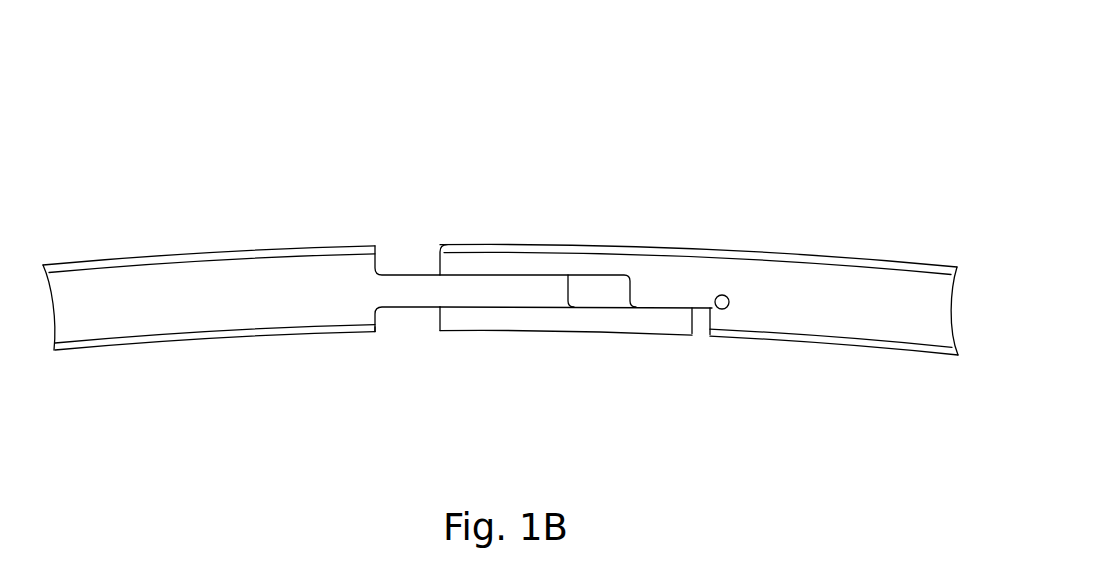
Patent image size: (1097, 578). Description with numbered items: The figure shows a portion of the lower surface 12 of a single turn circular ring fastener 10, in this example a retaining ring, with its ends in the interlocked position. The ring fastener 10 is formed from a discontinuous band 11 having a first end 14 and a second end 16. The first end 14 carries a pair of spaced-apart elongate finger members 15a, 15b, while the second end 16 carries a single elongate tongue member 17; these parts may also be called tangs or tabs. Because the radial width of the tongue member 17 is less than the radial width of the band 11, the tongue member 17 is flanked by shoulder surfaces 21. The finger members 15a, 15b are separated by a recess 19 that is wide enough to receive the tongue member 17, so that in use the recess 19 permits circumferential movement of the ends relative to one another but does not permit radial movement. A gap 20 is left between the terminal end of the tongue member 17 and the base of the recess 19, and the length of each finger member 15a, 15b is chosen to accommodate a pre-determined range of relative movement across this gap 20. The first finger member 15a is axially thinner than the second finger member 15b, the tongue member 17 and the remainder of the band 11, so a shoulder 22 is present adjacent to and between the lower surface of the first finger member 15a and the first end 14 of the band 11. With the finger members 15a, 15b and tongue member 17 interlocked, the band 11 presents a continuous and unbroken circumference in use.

The ring fastener 10 is at (898, 185).
The discontinuous band 11 is at (483, 145).
The lower surface 12 is at (122, 315).
The first end 14 is at (692, 285).
The first finger member 15a is at (613, 322).
The second finger member 15b is at (541, 262).
The second end 16 is at (353, 312).
The tongue member 17 is at (403, 293).
The recess 19 is at (570, 308).
The gap 20 is at (600, 285).
The shoulder surfaces 21 is at (380, 322).
The shoulder 22 is at (700, 323).